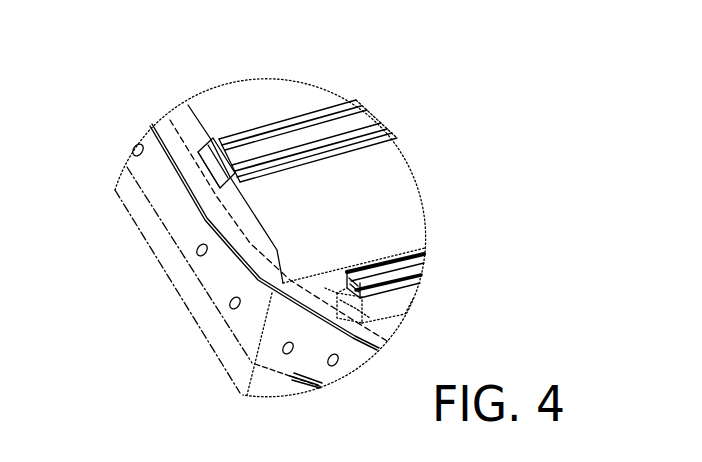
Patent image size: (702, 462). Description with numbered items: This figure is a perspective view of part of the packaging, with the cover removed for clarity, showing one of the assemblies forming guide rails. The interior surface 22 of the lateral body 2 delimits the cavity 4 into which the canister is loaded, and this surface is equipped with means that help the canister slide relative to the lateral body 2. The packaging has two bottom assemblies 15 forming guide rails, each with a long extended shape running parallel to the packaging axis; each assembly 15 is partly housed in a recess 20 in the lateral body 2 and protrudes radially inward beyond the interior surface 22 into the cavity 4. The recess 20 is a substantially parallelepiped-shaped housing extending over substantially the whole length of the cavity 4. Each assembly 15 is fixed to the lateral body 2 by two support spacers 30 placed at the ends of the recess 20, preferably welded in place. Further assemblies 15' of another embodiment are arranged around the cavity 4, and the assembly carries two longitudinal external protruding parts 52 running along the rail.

The lateral body 2 is at (203, 268).
The cavity 4 is at (360, 190).
The assembly forming guide rail 15 is at (431, 274).
The assembly forming guide rail (other embodiment) 15' is at (308, 111).
The recess 20 is at (363, 300).
The interior surface 22 is at (387, 212).
The support spacer 30 is at (352, 309).
The longitudinal external protruding part 52 is at (212, 158).